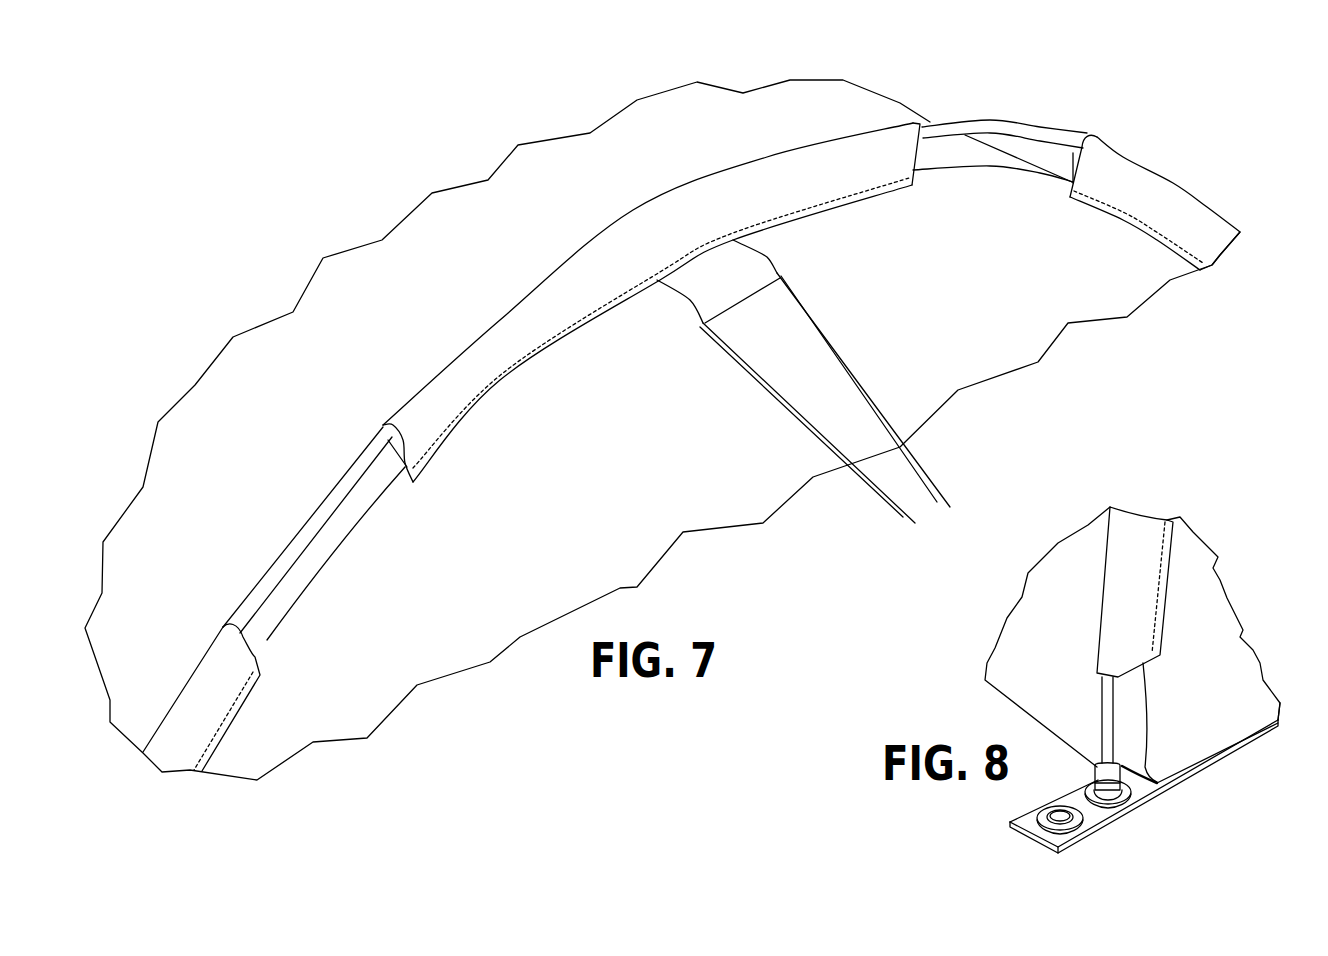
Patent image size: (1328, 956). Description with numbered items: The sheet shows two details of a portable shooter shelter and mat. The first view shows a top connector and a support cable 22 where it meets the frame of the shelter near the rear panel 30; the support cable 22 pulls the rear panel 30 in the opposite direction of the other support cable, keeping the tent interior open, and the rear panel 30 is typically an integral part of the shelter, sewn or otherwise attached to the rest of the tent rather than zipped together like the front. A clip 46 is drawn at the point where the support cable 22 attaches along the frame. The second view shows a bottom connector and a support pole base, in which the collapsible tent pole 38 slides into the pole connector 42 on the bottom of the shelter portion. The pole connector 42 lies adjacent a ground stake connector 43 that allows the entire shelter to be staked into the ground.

In FIG. 7, the support cable 22 is at (848, 362).
In FIG. 7, the rear panel 30 is at (724, 445).
In FIG. 7, the clip 46 is at (773, 255).
In FIG. 8, the collapsible tent pole 38 is at (1098, 708).
In FIG. 8, the pole connector 42 is at (1137, 793).
In FIG. 8, the ground stake connector 43 is at (1083, 822).